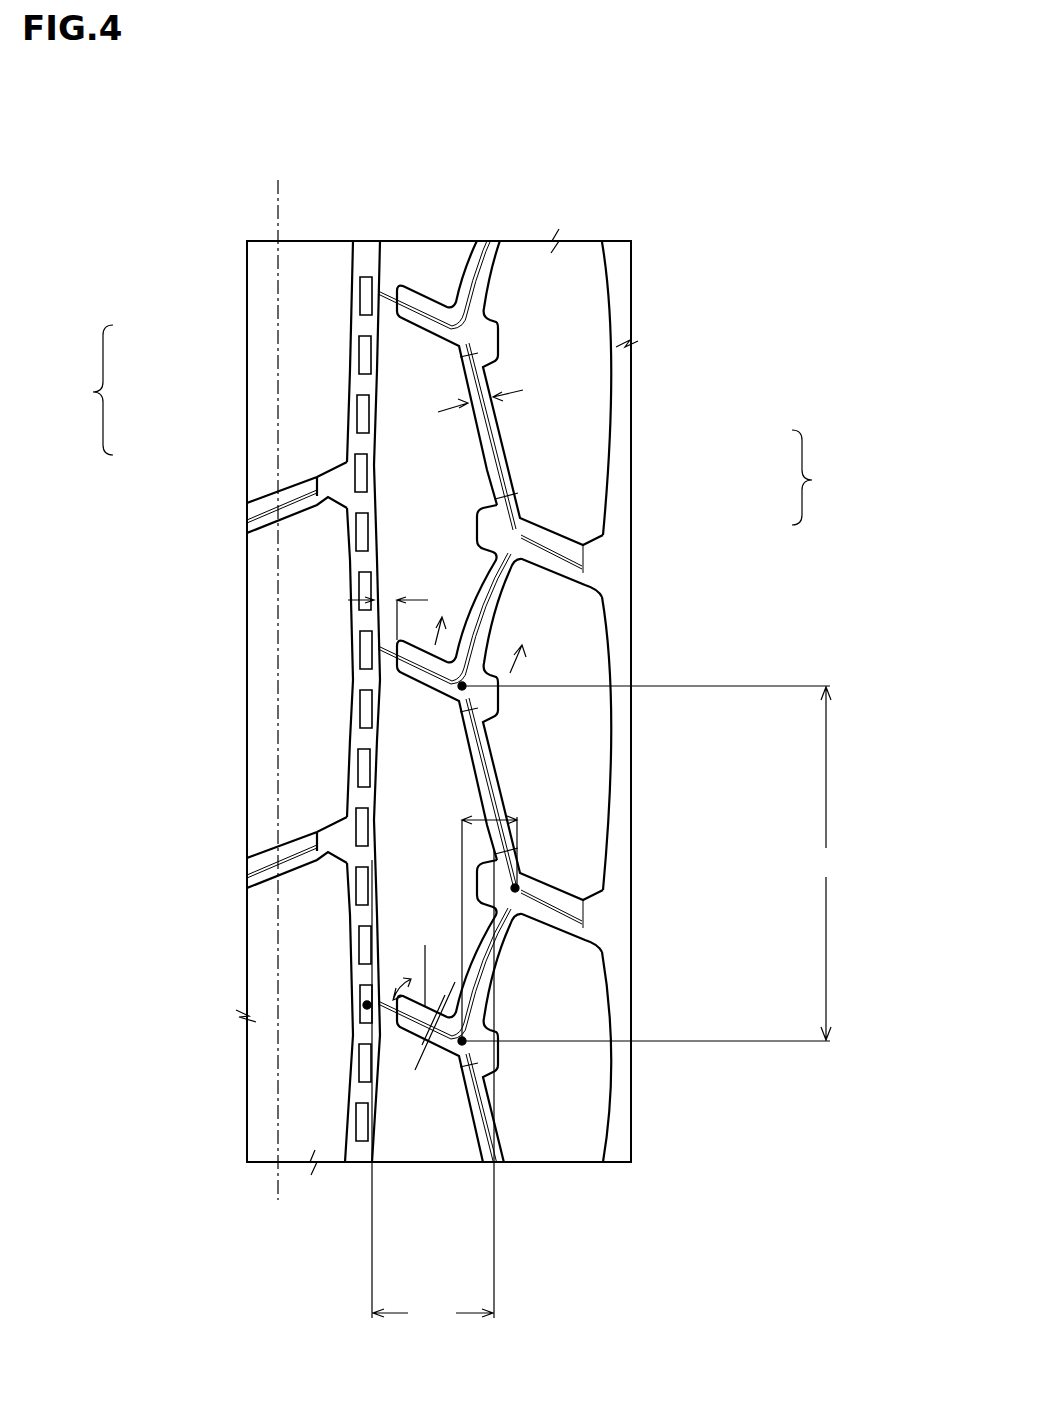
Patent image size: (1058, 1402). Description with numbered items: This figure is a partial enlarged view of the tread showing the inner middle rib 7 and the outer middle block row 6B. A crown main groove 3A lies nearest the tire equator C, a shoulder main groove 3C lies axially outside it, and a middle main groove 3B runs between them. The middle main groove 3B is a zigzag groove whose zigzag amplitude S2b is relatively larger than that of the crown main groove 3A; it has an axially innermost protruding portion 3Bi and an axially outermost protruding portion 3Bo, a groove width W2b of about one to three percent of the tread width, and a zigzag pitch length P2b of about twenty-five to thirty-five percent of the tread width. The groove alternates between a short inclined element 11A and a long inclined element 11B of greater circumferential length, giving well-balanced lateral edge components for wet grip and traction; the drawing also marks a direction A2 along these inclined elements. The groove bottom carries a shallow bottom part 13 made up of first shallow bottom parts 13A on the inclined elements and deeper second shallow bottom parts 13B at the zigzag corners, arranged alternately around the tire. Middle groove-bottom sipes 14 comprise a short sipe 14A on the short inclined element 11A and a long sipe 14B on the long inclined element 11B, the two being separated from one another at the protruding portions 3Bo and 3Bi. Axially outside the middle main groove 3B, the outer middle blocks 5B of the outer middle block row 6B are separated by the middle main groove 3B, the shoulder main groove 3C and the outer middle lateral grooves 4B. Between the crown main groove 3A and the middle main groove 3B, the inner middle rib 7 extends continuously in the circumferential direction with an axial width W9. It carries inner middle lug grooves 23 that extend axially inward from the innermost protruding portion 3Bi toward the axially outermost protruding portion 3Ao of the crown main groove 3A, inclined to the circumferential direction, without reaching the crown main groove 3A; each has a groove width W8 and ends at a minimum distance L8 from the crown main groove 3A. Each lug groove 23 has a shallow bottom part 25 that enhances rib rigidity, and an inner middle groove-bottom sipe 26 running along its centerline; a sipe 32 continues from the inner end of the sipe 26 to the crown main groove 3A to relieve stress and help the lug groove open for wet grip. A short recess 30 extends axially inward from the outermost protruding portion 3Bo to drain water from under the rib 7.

The crown main groove 3A is at (364, 253).
The middle main groove 3B is at (457, 682).
The shoulder main groove 3C is at (622, 244).
The outer middle block 5B is at (543, 552).
The outer middle block row 6B is at (543, 1084).
The inner middle rib 7 is at (447, 1074).
The short inclined element 11A is at (552, 554).
The long inclined element 11B is at (444, 263).
The shallow bottom part 13 is at (363, 709).
The first shallow bottom part 13A is at (473, 392).
The second shallow bottom part 13B is at (462, 357).
The middle groove-bottom sipe 14 is at (818, 477).
The short sipe 14A is at (444, 618).
The long sipe 14B is at (491, 436).
The inner middle lug groove 23 is at (500, 712).
The shallow bottom part 25 is at (297, 675).
The inner middle groove-bottom sipe 26 is at (402, 688).
The recess 30 is at (400, 1000).
The sipe 32 is at (491, 791).
The axially outermost protruding portion 3Ao is at (367, 1007).
The axially innermost protruding portion 3Bi is at (466, 1041).
The axially outermost protruding portion 3Bo is at (520, 890).
The outer middle lateral groove 4B is at (552, 909).
The tire equator C is at (279, 675).
The groove width W2b is at (478, 353).
The minimum distance L8 is at (388, 597).
The direction A2 is at (490, 631).
The zigzag amplitude S2b is at (520, 822).
The zigzag pitch length P2b is at (656, 863).
The groove width W8 is at (442, 1125).
The axial width W9 is at (433, 1088).